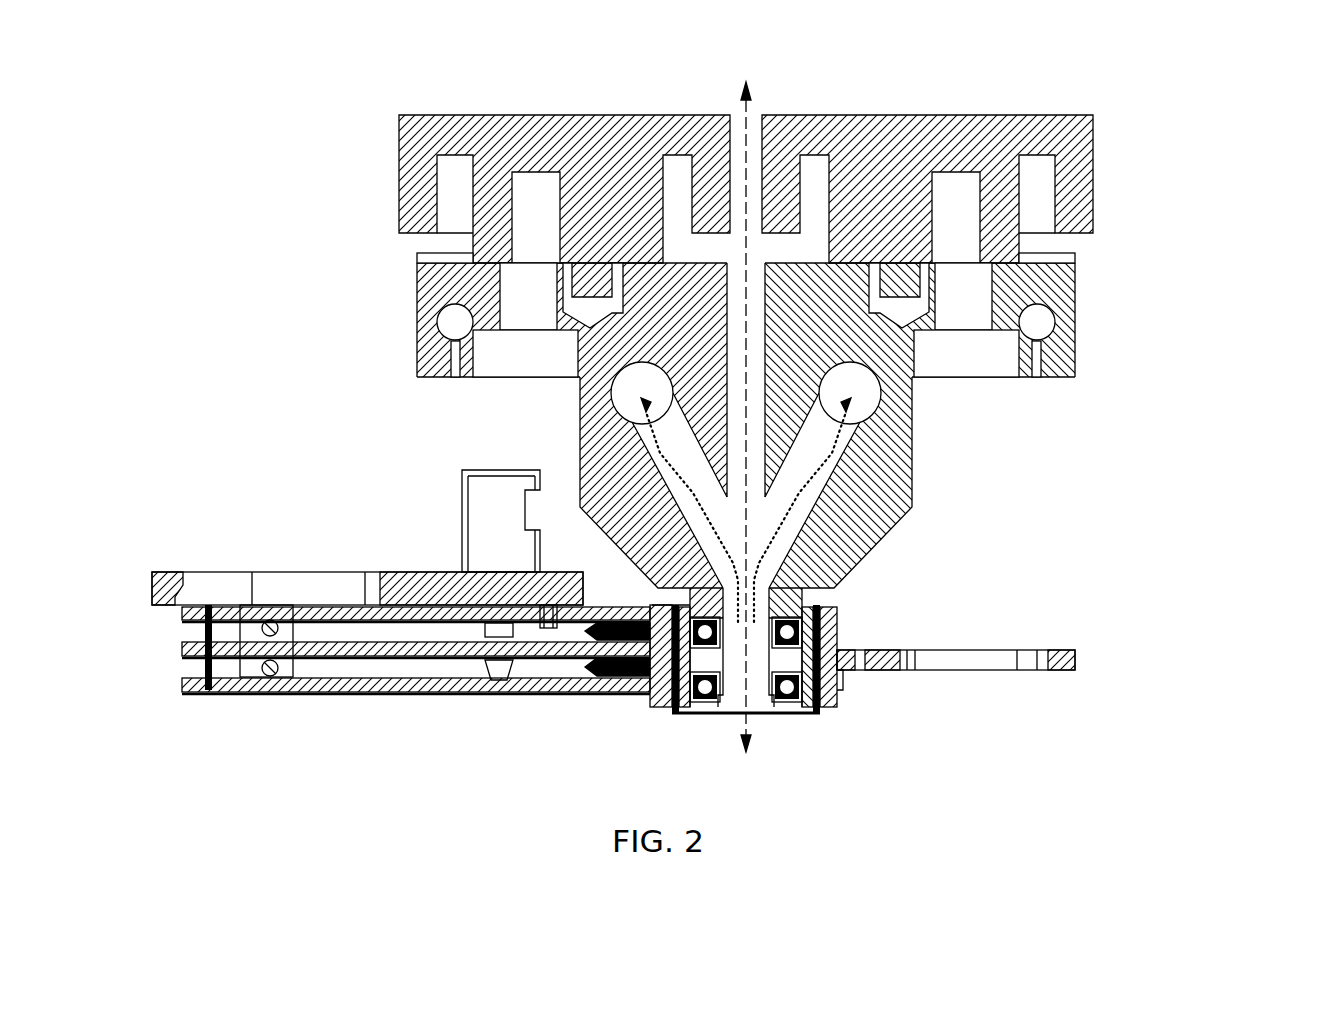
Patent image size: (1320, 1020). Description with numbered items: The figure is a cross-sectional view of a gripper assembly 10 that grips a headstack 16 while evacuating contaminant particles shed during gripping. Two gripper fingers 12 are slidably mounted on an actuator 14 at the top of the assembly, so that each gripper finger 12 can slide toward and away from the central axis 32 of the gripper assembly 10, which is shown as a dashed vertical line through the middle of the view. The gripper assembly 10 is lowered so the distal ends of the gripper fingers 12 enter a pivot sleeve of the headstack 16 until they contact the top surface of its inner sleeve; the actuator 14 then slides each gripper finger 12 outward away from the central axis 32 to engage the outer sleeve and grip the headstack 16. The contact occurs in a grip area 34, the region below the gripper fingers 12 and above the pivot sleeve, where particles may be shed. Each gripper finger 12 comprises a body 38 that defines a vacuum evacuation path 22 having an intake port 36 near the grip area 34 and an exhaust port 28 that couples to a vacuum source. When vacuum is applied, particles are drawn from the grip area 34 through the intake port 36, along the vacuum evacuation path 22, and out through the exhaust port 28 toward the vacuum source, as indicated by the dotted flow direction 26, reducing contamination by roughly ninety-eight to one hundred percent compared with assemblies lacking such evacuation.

The gripper assembly 10 is at (345, 99).
The gripper finger 12 is at (427, 281).
The actuator 14 is at (1043, 137).
The headstack 16 is at (420, 582).
The vacuum evacuation path 22 is at (815, 490).
The flow direction 26 is at (788, 505).
The exhaust port 28 is at (865, 393).
The central axis 32 is at (747, 110).
The grip area 34 is at (825, 703).
The intake port 36 is at (773, 566).
The body 38 is at (887, 437).